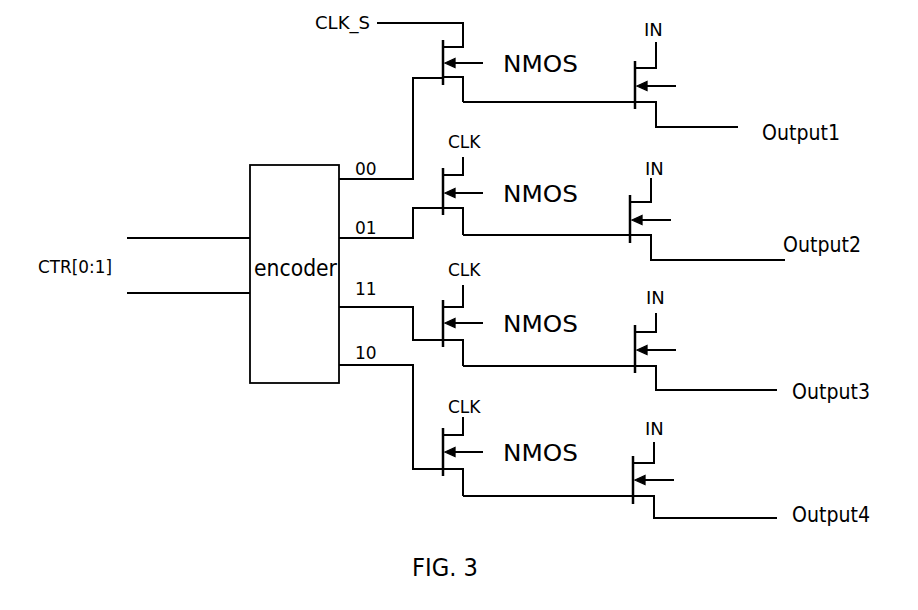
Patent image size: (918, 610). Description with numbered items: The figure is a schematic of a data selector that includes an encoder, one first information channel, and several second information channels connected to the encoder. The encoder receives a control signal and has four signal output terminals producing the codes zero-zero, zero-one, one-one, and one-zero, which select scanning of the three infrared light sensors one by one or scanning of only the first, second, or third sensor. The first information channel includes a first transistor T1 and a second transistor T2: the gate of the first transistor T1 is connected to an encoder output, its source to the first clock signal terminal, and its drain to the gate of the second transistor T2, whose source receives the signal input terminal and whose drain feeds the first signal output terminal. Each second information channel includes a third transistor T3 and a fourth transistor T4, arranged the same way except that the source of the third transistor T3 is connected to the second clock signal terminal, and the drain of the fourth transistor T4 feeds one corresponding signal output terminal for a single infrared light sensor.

The first transistor T1 is at (430, 62).
The second transistor T2 is at (670, 84).
The third transistor T3 is at (446, 196).
The fourth transistor T4 is at (691, 219).